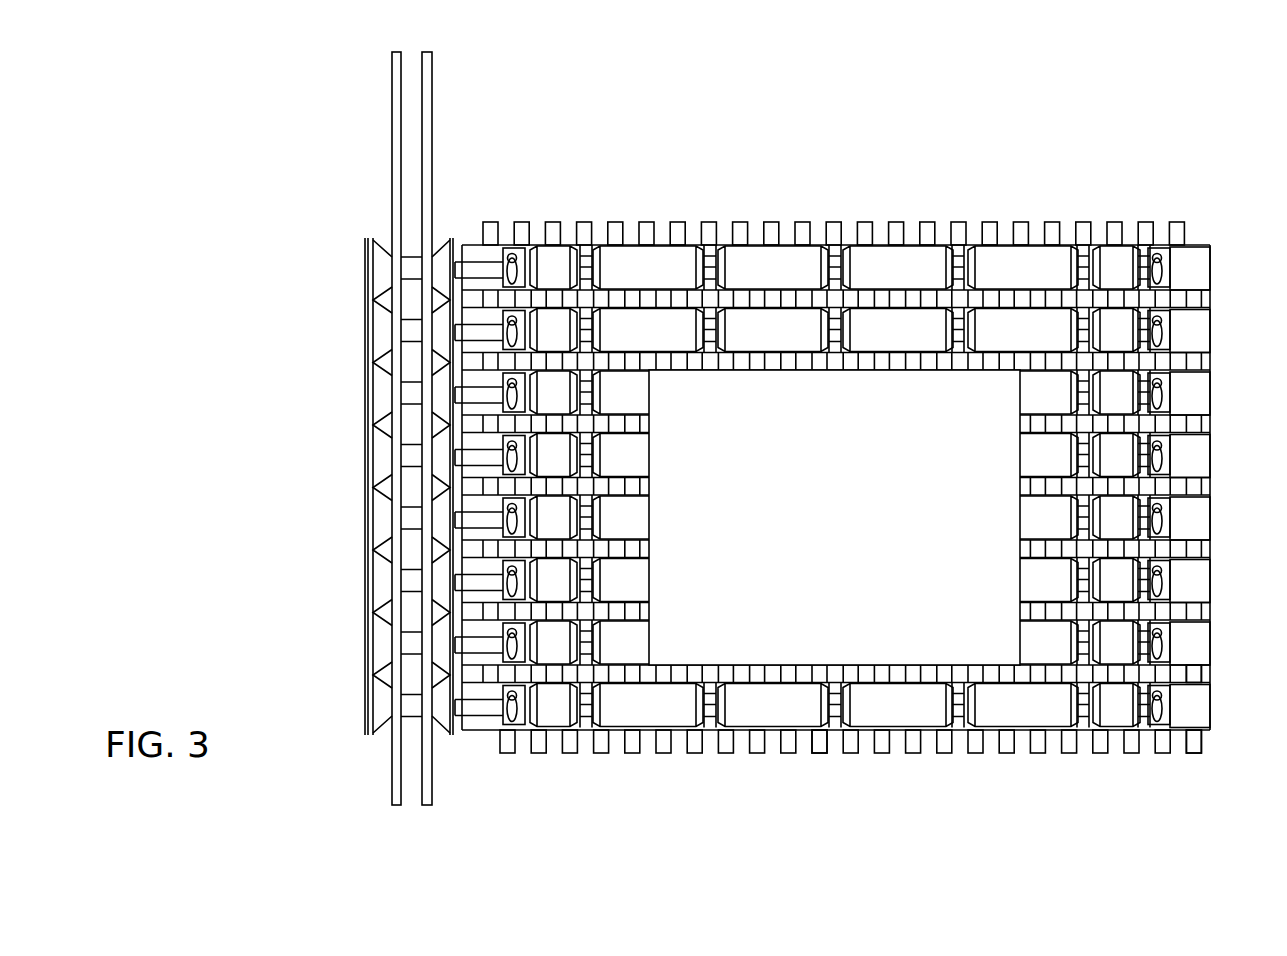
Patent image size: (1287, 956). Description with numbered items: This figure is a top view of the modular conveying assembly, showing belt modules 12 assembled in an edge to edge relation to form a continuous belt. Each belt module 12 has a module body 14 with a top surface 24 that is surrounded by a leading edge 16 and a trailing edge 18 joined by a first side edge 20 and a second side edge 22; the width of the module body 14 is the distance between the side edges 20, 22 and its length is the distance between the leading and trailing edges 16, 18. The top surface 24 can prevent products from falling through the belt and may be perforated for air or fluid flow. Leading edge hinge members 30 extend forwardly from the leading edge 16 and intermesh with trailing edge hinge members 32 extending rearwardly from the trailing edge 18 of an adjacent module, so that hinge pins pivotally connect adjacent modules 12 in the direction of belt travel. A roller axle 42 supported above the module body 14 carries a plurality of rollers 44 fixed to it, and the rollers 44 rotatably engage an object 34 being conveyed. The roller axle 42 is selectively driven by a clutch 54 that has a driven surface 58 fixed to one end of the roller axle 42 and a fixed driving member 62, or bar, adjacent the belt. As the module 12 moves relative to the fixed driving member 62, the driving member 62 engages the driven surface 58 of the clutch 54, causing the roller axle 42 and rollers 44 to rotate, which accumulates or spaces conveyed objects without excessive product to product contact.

The belt module 12 is at (1212, 717).
The module body 14 is at (1198, 725).
The leading edge 16 is at (1180, 753).
The trailing edge 18 is at (1198, 681).
The first side edge 20 is at (1212, 704).
The second side edge 22 is at (833, 753).
The top surface 24 is at (1176, 715).
The leading edge hinge member 30 is at (1038, 757).
The trailing edge hinge member 32 is at (1084, 222).
The object 34 is at (826, 524).
The roller axle 42 is at (485, 270).
The roller 44 is at (541, 718).
The clutch 54 is at (432, 446).
The driven surface 58 is at (445, 742).
The driving member 62 is at (410, 807).